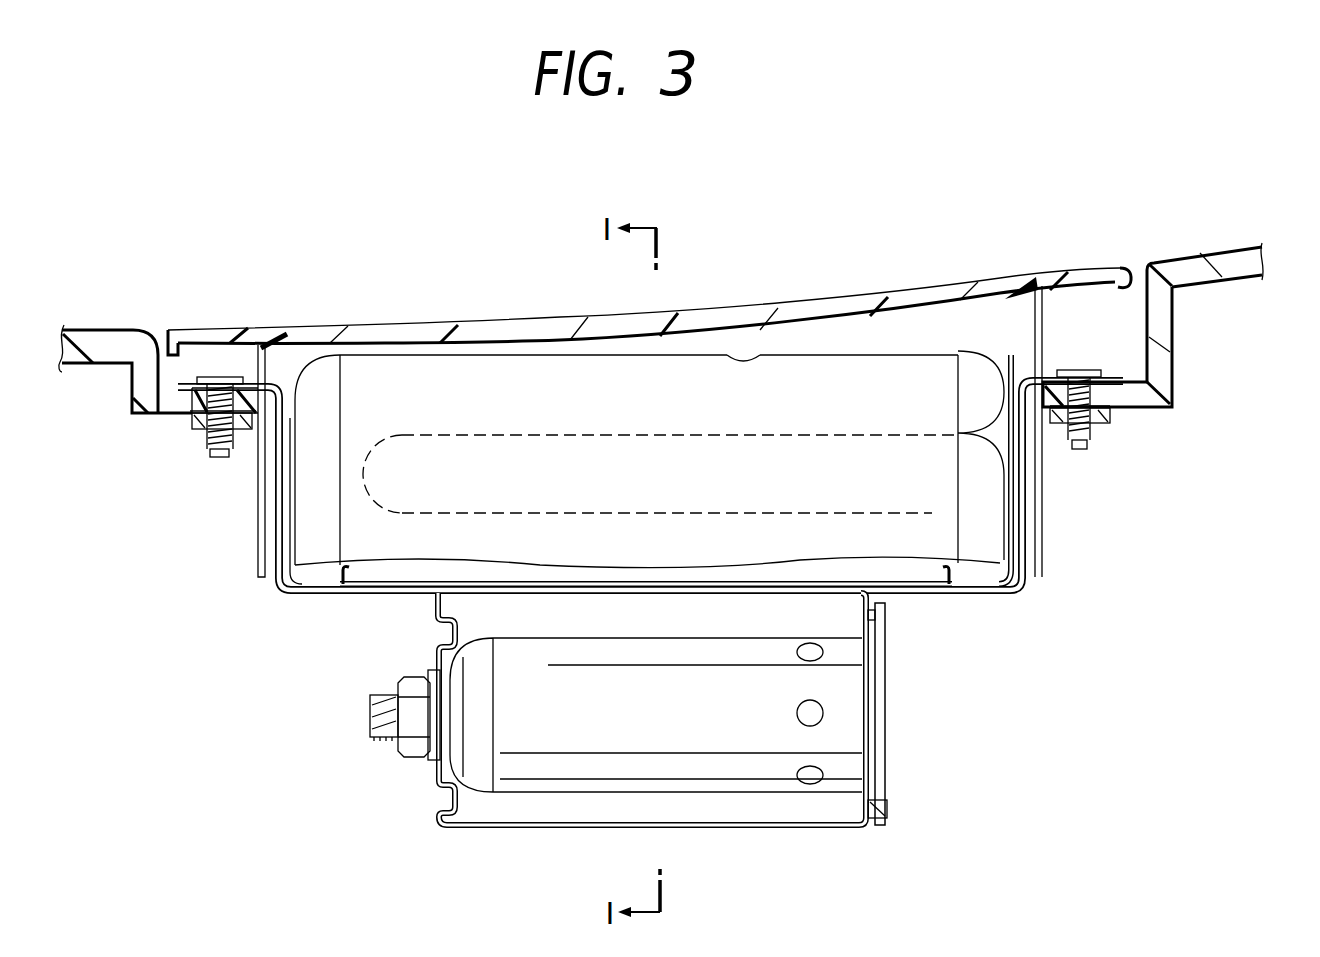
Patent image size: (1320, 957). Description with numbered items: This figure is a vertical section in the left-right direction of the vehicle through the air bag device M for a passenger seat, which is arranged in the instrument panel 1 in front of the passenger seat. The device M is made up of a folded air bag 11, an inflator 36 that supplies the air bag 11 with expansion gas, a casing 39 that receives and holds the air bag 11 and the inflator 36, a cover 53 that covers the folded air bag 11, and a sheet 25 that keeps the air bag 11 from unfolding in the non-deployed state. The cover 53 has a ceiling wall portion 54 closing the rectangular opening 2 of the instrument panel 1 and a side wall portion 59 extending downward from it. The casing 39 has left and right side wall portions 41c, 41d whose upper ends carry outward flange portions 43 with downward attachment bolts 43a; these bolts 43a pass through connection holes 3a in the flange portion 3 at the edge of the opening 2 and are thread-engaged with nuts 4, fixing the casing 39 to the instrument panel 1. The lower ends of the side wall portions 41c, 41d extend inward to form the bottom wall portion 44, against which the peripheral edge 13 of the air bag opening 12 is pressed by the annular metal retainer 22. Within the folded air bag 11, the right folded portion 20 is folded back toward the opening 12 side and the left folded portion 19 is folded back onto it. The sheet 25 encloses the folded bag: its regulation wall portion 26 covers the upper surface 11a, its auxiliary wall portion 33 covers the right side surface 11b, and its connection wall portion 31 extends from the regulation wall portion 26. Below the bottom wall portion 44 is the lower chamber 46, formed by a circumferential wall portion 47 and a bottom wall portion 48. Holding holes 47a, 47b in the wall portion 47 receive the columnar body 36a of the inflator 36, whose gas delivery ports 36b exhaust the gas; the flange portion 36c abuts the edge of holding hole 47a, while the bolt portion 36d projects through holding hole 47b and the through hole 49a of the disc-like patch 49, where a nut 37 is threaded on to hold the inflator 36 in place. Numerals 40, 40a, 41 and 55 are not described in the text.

The instrument panel 1 is at (100, 335).
The opening 2 is at (162, 344).
The flange portion 3 is at (167, 408).
The connection holes 3a is at (205, 431).
The nuts 4 is at (190, 425).
The air bag 11 is at (972, 372).
The upper surface 11a is at (760, 353).
The right side surface 11b is at (1008, 473).
The opening 12 is at (438, 590).
The peripheral edge 13 is at (360, 588).
The left folded portion 19 is at (527, 395).
The right folded portion 20 is at (627, 525).
The retainer 22 is at (290, 588).
The sheet 25 is at (859, 280).
The regulation wall portion 26 is at (818, 352).
The connection wall portion 31 is at (422, 385).
The auxiliary wall portion 33 is at (1022, 508).
The inflator 36 is at (722, 800).
The body 36a is at (540, 772).
The gas delivery ports 36b is at (808, 770).
The flange portion 36c is at (887, 808).
The bolt portion 36d is at (373, 716).
The nut 37 is at (410, 748).
The casing 39 is at (1032, 604).
The tank holding bracket 40 is at (1028, 584).
The upper end portion 40a is at (1017, 335).
The side wall 41 is at (664, 538).
The left side wall portion 41c is at (262, 540).
The right side wall portion 41d is at (1036, 520).
The flange portions 43 is at (187, 384).
The attachment bolts 43a is at (222, 456).
The bottom wall portion 44 is at (962, 594).
The lower chamber 46 is at (790, 802).
The circumferential wall portion 47 is at (864, 606).
The holding hole 47a is at (881, 640).
The holding hole 47b is at (440, 630).
The bottom wall portion 48 is at (683, 829).
The patch 49 is at (455, 814).
The through hole 49a is at (445, 729).
The cover 53 is at (1120, 238).
The ceiling wall portion 54 is at (1067, 276).
The floor panel 55 is at (678, 313).
The side wall portion 59 is at (268, 348).
The air bag device M is at (1008, 793).